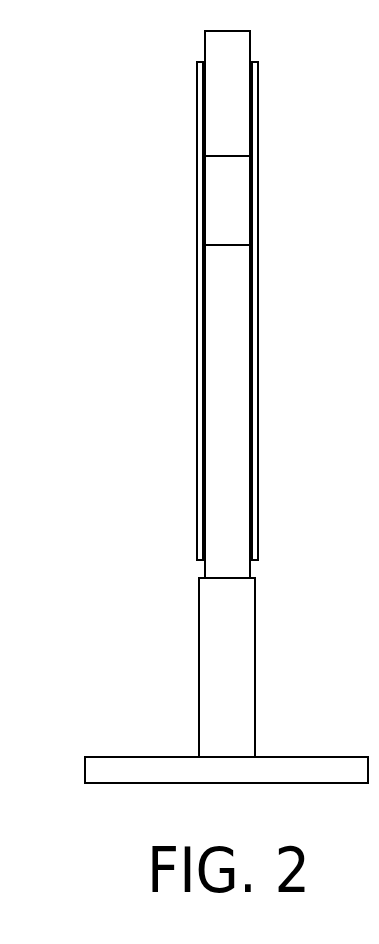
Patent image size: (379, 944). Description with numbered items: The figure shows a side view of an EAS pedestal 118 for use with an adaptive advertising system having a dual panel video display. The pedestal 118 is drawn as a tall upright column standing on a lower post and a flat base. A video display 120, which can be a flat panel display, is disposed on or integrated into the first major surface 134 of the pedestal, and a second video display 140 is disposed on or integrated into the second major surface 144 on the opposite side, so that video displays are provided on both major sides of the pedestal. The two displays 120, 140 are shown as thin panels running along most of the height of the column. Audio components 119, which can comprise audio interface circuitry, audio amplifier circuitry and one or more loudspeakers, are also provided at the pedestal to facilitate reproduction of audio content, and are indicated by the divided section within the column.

The EAS pedestal 118 is at (213, 43).
The audio components 119 is at (216, 208).
The video display 120 is at (259, 290).
The second video display 140 is at (197, 362).
The second major surface 144 is at (202, 568).
The first major surface 134 is at (252, 570).